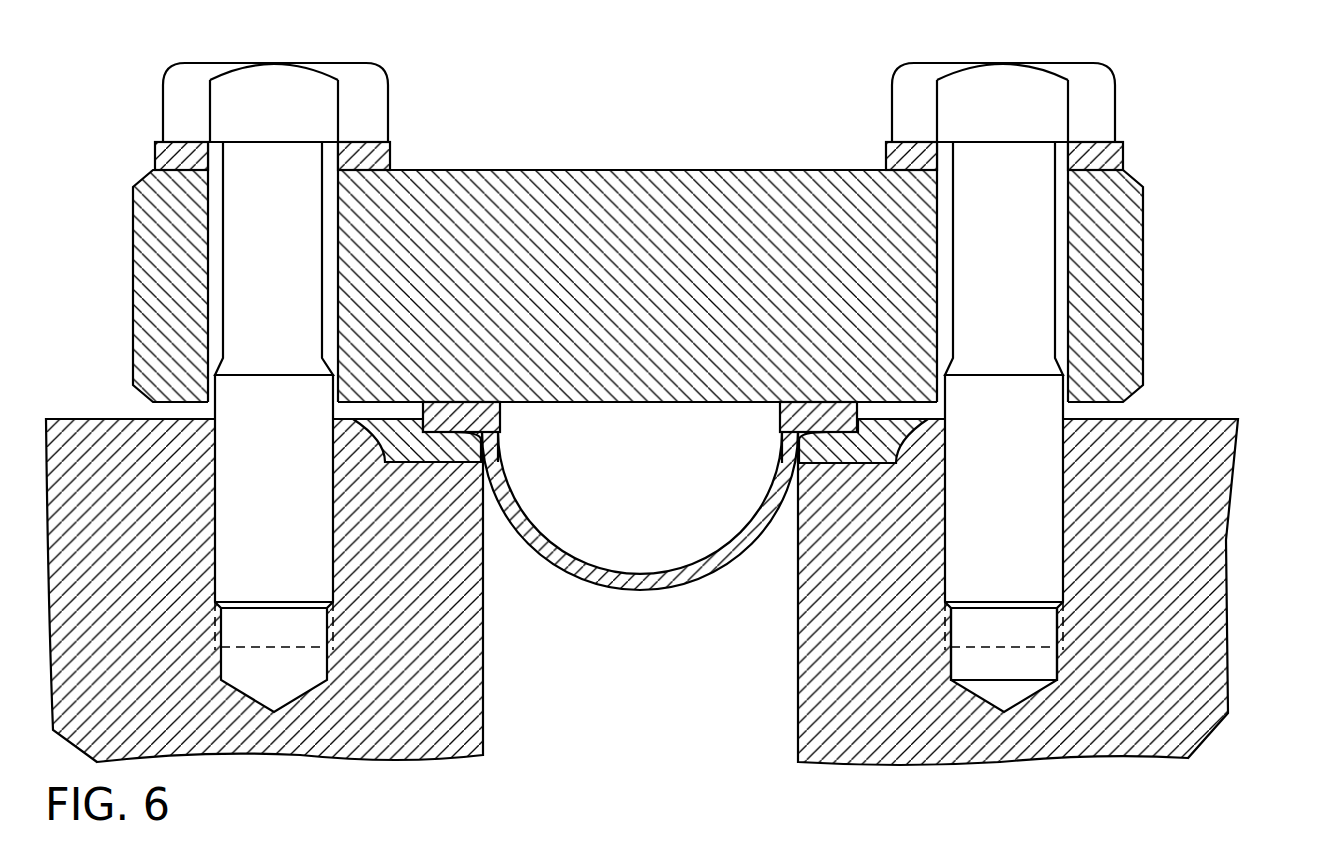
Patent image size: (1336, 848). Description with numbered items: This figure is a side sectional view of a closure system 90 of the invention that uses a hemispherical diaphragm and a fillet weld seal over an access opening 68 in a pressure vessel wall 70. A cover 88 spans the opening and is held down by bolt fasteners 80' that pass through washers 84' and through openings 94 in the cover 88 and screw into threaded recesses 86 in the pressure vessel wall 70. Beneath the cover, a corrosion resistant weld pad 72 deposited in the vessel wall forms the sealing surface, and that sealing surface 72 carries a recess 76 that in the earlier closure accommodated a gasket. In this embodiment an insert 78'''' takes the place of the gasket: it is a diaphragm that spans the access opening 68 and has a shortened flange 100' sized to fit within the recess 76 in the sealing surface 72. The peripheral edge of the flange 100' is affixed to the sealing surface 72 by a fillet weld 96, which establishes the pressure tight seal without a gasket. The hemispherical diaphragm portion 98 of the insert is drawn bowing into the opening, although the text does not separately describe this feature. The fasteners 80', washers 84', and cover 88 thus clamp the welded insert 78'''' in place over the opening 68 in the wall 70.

The closure system 90 is at (687, 415).
The cover 88 is at (687, 239).
The bolt fastener 80' is at (1049, 387).
The washer 84' is at (1064, 155).
The opening 94 is at (1067, 280).
The fillet weld 96 is at (863, 412).
The flange 100' is at (796, 422).
The weld pad sealing surface 72 is at (487, 460).
The recess 76 is at (800, 452).
The outer surface of tube 98 is at (580, 577).
The insert 78'''' is at (722, 501).
The access opening 68 is at (656, 677).
The pressure vessel wall 70 is at (1207, 565).
The threaded recess 86 is at (1050, 652).